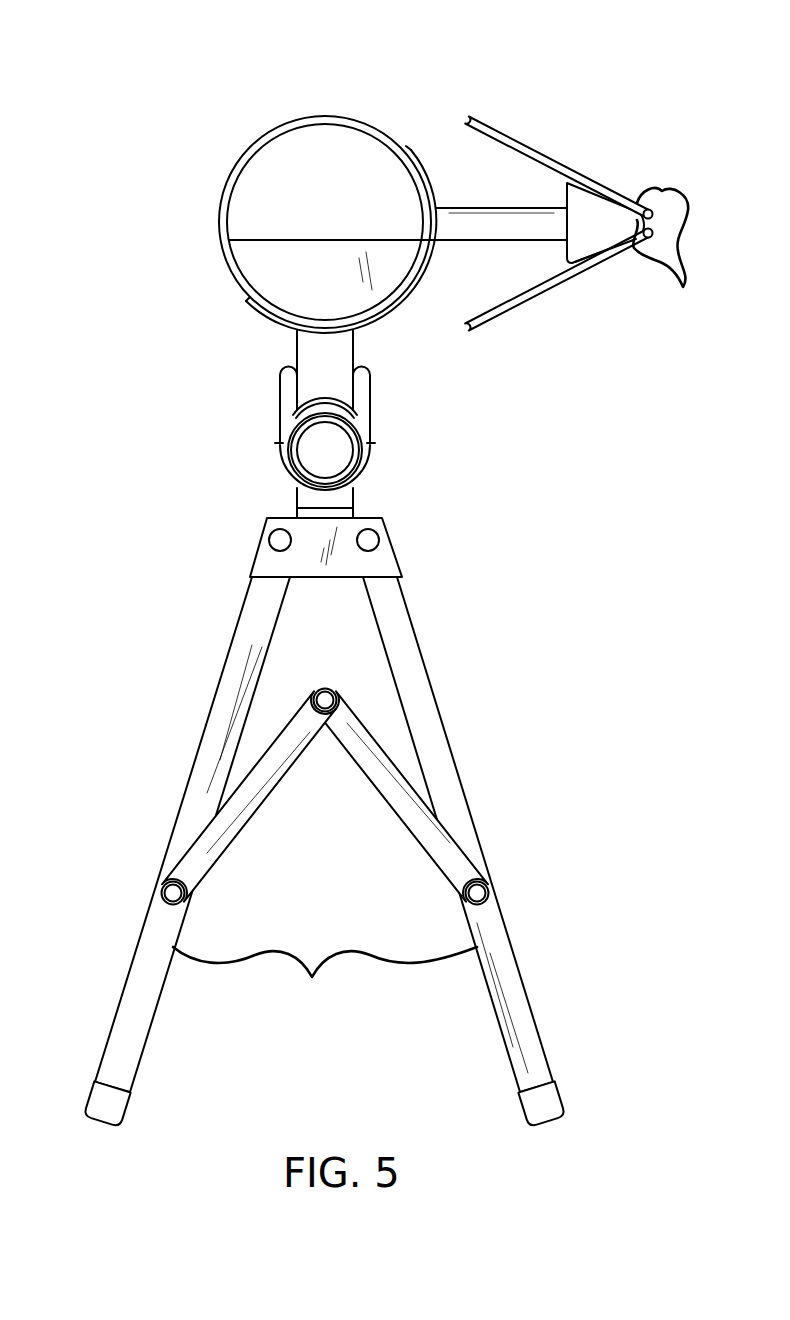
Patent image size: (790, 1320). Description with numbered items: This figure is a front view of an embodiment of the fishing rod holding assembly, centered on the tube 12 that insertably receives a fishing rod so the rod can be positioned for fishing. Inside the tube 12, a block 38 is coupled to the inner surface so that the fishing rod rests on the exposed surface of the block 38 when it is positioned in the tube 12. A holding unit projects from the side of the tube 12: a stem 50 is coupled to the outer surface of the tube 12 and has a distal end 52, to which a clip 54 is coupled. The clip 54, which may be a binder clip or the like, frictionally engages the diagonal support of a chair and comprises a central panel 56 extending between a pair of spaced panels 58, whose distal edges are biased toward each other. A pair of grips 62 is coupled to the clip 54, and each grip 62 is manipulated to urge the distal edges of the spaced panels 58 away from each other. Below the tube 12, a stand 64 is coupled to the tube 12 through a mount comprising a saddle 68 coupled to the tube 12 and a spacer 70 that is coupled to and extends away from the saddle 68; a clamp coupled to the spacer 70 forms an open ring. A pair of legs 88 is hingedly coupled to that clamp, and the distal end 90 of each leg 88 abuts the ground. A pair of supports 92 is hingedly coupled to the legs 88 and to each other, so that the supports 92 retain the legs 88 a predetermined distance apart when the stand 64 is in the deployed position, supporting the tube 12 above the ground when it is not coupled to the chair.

The tube 12 is at (225, 193).
The block 38 is at (300, 240).
The stem 50 is at (475, 208).
The distal end 52 is at (570, 223).
The clip 54 is at (567, 185).
The central panel 56 is at (568, 262).
The spaced panels 58 is at (671, 257).
The grips 62 is at (512, 133).
The stand 64 is at (430, 535).
The saddle 68 is at (404, 300).
The spacer 70 is at (298, 373).
The legs 88 is at (324, 834).
The distal end 90 is at (107, 1123).
The supports 92 is at (357, 713).